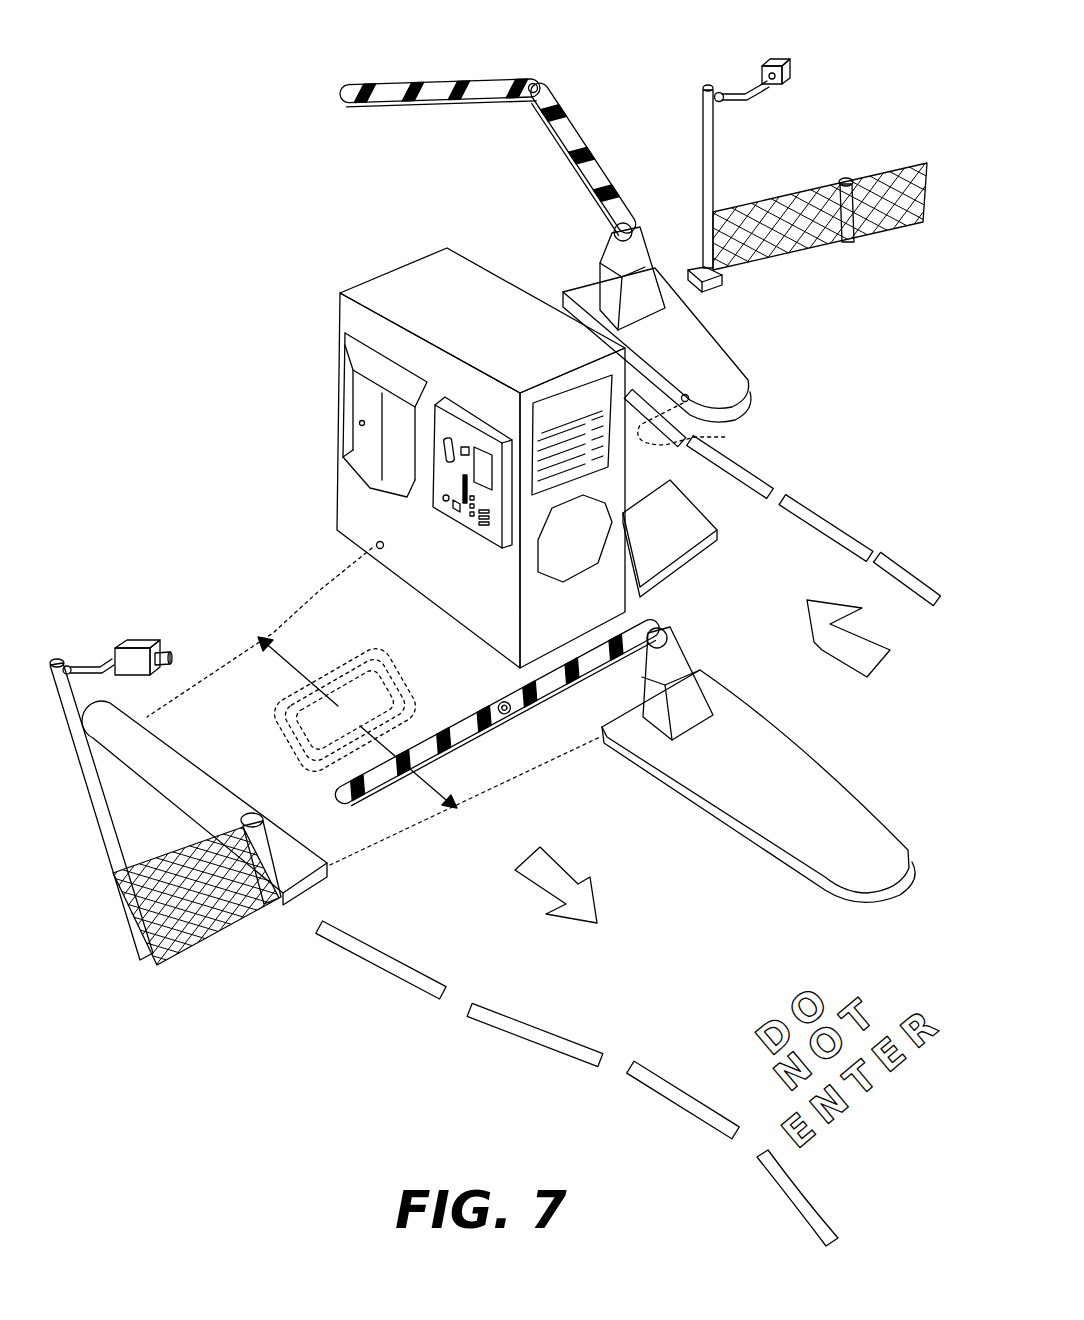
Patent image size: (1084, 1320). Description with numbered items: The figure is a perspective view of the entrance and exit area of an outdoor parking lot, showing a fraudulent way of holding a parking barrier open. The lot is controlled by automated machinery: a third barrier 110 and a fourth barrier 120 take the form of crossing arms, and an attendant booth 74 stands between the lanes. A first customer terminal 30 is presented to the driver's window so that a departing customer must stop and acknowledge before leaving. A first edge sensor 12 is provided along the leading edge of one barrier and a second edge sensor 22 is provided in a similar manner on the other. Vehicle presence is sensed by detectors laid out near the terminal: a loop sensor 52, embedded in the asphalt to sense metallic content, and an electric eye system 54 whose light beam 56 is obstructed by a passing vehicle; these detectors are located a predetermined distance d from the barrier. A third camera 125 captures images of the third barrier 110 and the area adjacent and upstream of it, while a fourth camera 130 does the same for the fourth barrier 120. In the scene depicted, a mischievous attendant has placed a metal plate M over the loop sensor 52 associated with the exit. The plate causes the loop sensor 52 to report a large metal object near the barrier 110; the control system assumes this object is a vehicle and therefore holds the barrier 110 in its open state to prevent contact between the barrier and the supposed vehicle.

The third barrier 110 is at (545, 212).
The first edge sensor 12 is at (465, 112).
The third camera 125 is at (792, 58).
The attendant booth 74 is at (481, 430).
The first customer terminal 30 is at (470, 402).
The electric eye system 54 is at (386, 548).
The light beam 56 is at (268, 565).
The metal plate M is at (718, 542).
The second edge sensor 22 is at (473, 750).
The loop sensor 52 is at (332, 650).
The distance d is at (357, 722).
The fourth barrier 120 is at (328, 779).
The fourth camera 130 is at (130, 640).